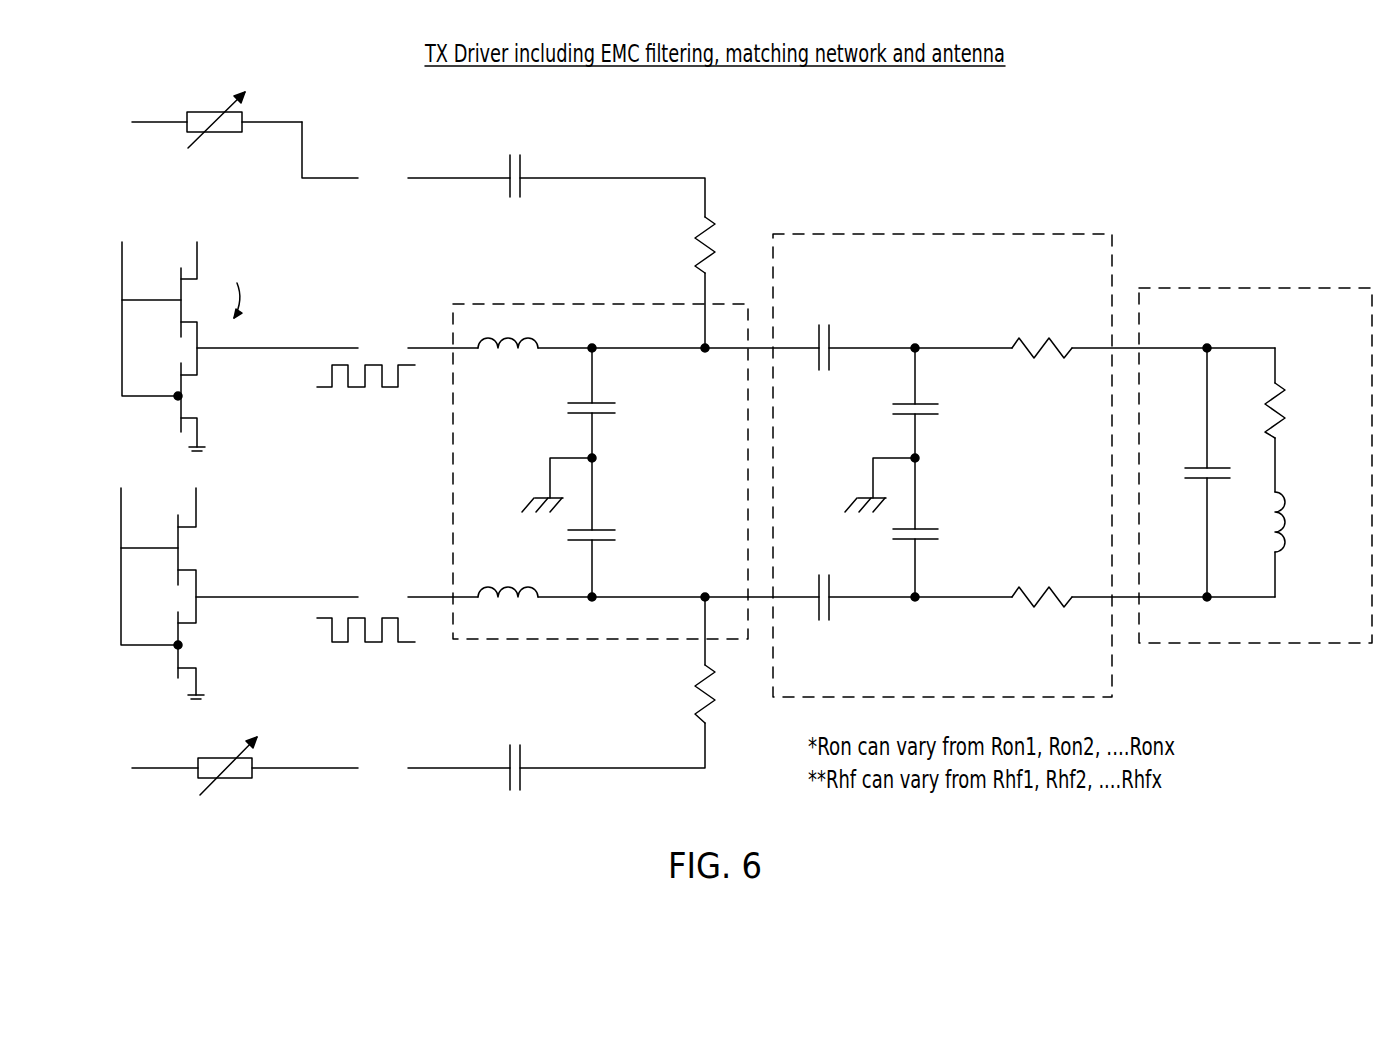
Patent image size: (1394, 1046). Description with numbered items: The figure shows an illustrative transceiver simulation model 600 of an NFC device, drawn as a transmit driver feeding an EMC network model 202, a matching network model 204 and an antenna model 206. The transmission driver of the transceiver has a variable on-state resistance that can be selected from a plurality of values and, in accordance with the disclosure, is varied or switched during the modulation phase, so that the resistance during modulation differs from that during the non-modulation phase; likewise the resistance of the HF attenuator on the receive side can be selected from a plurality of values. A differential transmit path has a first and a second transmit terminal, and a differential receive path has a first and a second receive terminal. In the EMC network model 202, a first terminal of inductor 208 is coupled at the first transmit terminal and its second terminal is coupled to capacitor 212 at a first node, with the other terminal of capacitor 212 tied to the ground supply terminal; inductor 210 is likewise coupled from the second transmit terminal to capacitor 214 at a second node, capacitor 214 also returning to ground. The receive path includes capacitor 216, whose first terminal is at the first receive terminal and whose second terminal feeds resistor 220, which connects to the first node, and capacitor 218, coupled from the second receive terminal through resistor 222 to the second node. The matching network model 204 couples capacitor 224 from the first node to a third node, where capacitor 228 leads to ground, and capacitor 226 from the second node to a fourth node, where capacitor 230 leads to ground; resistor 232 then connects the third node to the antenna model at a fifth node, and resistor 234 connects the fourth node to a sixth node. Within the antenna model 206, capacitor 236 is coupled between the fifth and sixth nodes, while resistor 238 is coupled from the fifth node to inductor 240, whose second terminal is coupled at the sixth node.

The transceiver simulation model 600 is at (1097, 130).
The EMC network model 202 is at (580, 292).
The matching network model 204 is at (975, 233).
The antenna model 206 is at (1282, 288).
The inductor 208 is at (495, 352).
The inductor 210 is at (500, 575).
The capacitor 212 is at (608, 403).
The capacitor 214 is at (608, 529).
The capacitor 216 is at (508, 195).
The capacitor 218 is at (507, 758).
The resistor 220 is at (697, 236).
The resistor 222 is at (697, 709).
The capacitor 224 is at (832, 338).
The capacitor 226 is at (833, 606).
The capacitor 228 is at (950, 390).
The capacitor 230 is at (932, 529).
The resistor 232 is at (1050, 362).
The resistor 234 is at (1050, 610).
The capacitor 236 is at (1197, 467).
The resistor 238 is at (1282, 388).
The inductor 240 is at (1292, 516).